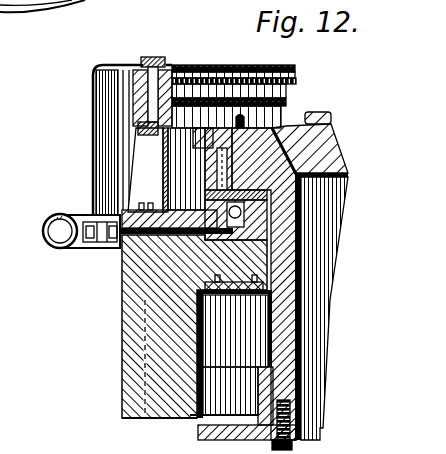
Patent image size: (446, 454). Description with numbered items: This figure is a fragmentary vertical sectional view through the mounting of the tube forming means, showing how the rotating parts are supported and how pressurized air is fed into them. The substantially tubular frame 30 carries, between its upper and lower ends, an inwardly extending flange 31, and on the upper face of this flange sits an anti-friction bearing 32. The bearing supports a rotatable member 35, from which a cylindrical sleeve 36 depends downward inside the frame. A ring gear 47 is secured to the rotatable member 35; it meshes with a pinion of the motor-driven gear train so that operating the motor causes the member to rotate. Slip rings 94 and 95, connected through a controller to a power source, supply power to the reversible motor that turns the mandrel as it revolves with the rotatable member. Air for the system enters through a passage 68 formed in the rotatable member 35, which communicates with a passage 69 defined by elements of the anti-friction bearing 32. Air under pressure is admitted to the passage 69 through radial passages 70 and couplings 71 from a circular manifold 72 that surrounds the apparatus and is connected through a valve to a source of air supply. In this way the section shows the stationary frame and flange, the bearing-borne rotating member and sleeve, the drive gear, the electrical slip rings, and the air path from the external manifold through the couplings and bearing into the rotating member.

The tubular frame 30 is at (135, 390).
The inwardly extending flange 31 is at (143, 262).
The anti-friction bearing 32 is at (268, 205).
The rotatable member 35 is at (326, 147).
The depending cylindrical sleeve 36 is at (283, 335).
The ring gear 47 is at (202, 130).
The passage 68 is at (313, 194).
The passage 69 is at (213, 207).
The radial passages 70 is at (125, 298).
The couplings 71 is at (100, 248).
The circular manifold 72 is at (45, 236).
The slip ring 94 is at (296, 78).
The slip ring 95 is at (287, 102).